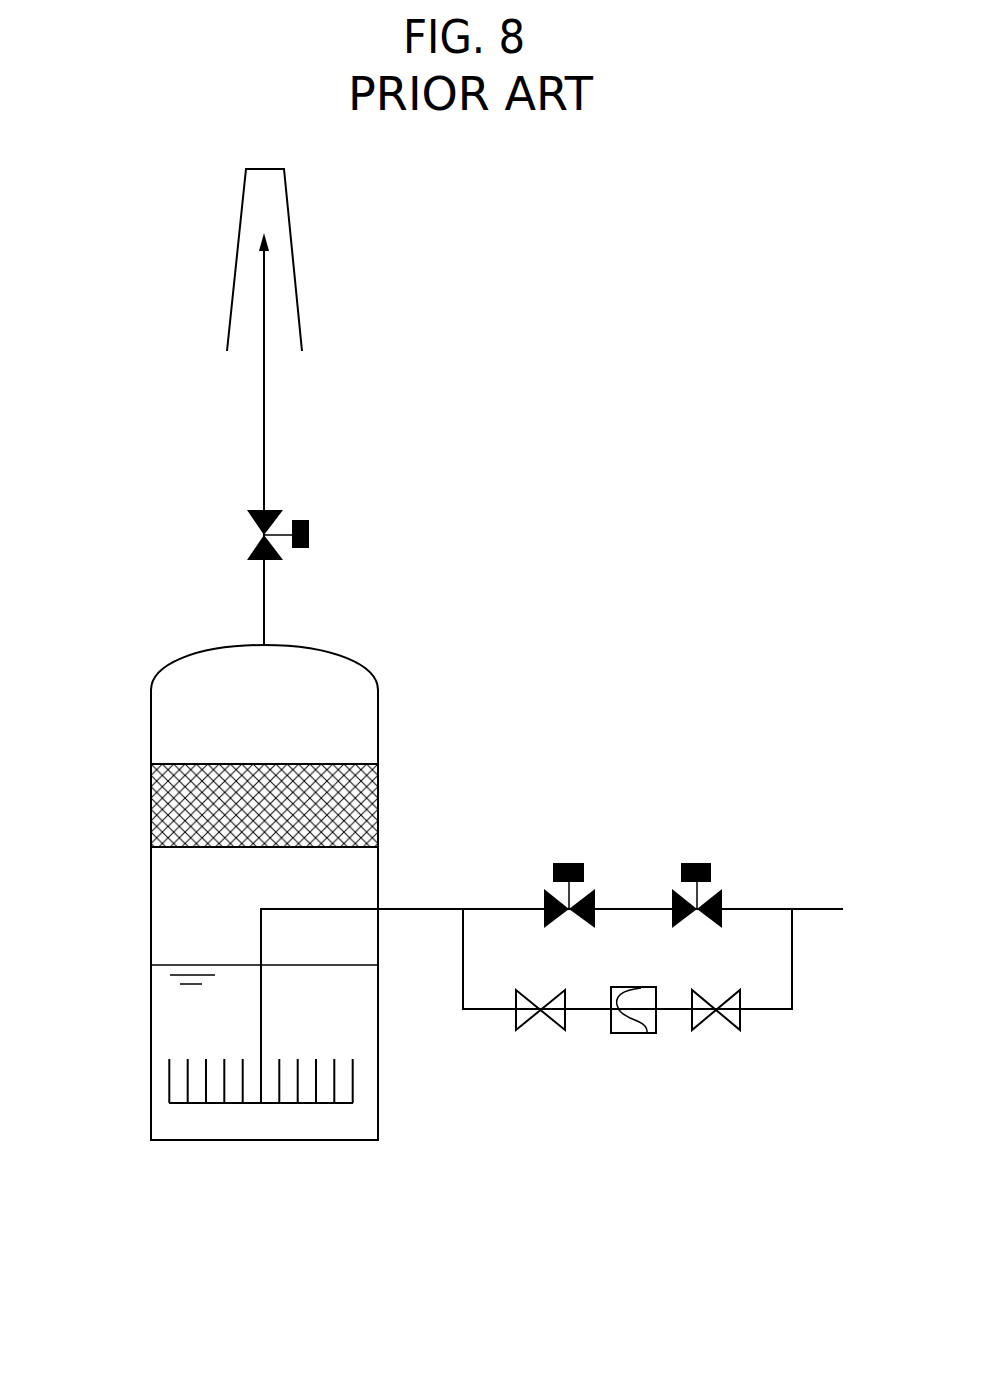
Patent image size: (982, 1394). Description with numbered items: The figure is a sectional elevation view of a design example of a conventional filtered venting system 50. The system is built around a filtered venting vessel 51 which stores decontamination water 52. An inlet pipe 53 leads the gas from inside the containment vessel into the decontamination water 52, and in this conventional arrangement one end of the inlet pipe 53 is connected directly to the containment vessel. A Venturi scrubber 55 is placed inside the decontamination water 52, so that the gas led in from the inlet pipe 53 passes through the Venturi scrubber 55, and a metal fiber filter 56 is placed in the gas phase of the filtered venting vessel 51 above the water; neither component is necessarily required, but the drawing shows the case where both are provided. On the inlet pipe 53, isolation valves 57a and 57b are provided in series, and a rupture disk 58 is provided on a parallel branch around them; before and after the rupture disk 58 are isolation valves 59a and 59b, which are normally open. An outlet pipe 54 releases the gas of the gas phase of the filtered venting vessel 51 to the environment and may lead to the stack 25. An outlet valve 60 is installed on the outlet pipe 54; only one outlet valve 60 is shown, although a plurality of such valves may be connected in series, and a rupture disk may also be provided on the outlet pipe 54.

The stack 25 is at (290, 230).
The filtered venting system 50 is at (472, 712).
The filtered venting vessel 51 is at (365, 668).
The decontamination water 52 is at (183, 1021).
The inlet pipe 53 is at (437, 910).
The outlet pipe 54 is at (264, 423).
The Venturi scrubber 55 is at (311, 1103).
The metal fiber filter 56 is at (173, 801).
The isolation valve 57a is at (565, 862).
The isolation valve 57b is at (692, 862).
The rupture disk 58 is at (627, 1033).
The isolation valve 59a is at (538, 1018).
The isolation valve 59b is at (717, 1018).
The outlet valve 60 is at (309, 535).